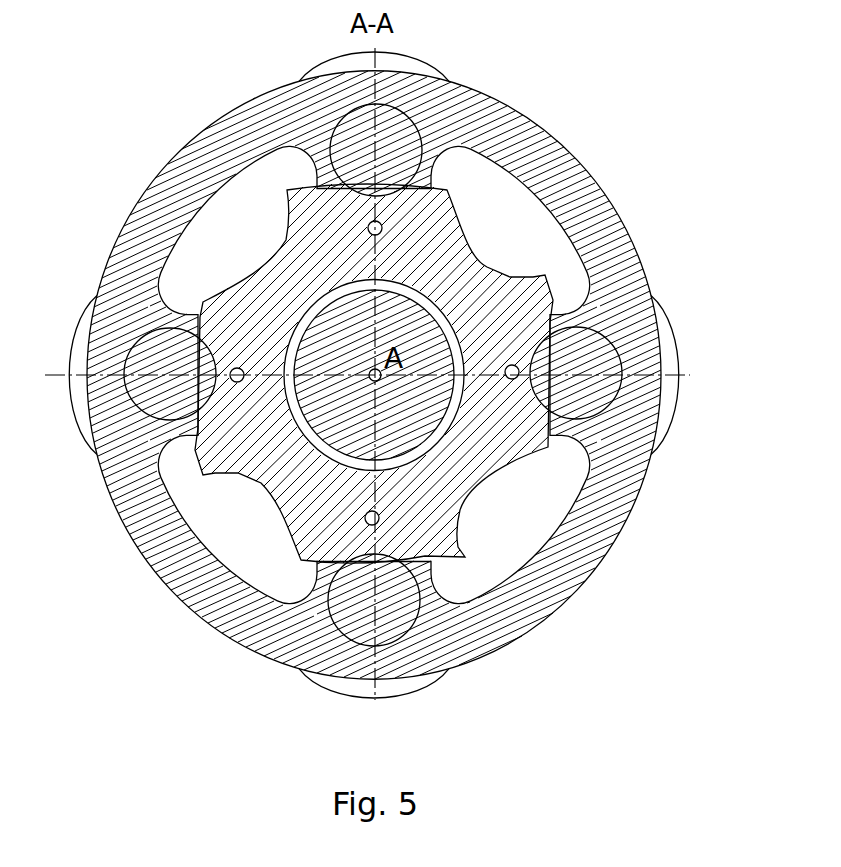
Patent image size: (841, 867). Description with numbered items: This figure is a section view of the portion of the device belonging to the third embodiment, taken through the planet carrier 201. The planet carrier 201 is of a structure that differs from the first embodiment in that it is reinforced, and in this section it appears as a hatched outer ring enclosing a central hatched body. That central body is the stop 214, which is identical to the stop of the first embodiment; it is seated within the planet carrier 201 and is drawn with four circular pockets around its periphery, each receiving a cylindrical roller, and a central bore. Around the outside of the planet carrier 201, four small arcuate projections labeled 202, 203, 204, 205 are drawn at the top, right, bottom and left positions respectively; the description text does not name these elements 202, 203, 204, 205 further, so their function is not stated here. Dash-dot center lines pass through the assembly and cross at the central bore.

The planet carrier 201 is at (176, 130).
The lobe 202 is at (338, 56).
The lobe 203 is at (670, 332).
The lobe 204 is at (405, 690).
The lobe 205 is at (63, 400).
The stop 214 is at (477, 305).